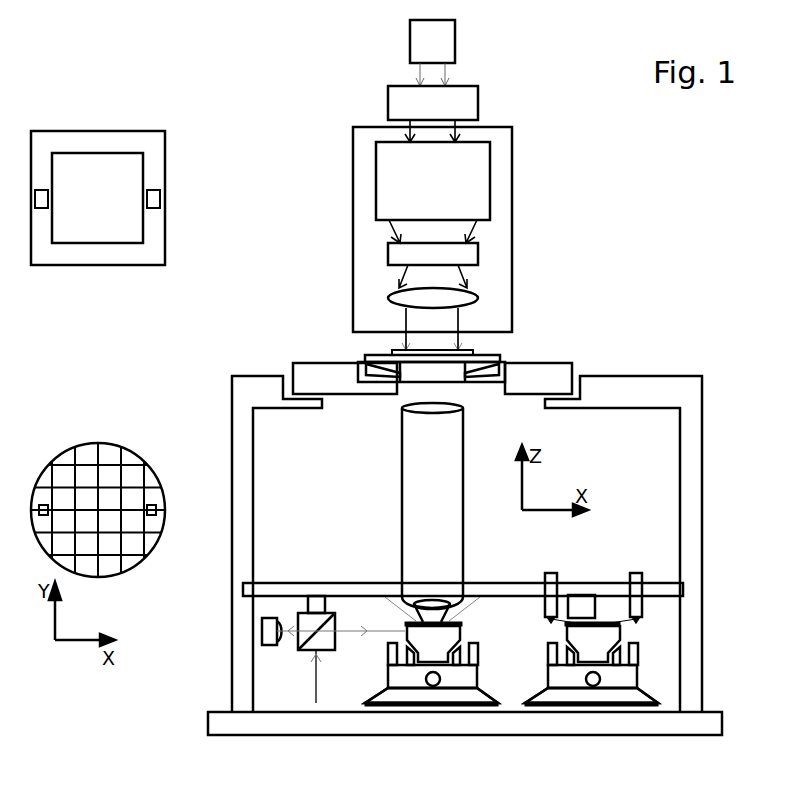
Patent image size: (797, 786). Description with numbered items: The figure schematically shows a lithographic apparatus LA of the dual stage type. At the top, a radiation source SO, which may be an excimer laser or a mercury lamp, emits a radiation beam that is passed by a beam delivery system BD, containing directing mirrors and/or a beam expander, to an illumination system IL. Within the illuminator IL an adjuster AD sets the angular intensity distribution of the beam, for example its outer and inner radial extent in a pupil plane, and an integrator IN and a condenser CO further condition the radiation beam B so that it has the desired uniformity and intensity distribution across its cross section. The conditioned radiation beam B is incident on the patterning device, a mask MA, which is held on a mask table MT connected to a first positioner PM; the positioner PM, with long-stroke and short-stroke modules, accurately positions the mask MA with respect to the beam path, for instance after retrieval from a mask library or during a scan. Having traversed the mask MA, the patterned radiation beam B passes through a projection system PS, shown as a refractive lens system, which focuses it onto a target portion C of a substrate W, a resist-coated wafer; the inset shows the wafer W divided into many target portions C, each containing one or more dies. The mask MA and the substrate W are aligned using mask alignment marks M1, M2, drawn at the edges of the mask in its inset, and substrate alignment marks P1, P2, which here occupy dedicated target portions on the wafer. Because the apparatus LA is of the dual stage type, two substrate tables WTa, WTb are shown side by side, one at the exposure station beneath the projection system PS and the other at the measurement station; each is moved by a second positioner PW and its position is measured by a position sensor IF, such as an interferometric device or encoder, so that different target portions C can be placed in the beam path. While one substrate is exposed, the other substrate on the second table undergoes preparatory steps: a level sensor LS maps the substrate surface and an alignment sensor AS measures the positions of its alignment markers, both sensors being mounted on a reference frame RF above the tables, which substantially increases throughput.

The lithographic apparatus LA is at (612, 203).
The radiation source SO is at (455, 45).
The beam delivery system BD is at (478, 110).
The illumination system IL is at (512, 160).
The adjuster AD is at (490, 200).
The integrator IN is at (478, 252).
The condenser CO is at (470, 297).
The radiation beam B is at (433, 347).
The patterning device MA is at (172, 220).
The mask alignment mark M1 is at (153, 190).
The mask alignment mark M2 is at (40, 190).
The first positioner PM is at (293, 366).
The mask table MT is at (572, 363).
The projection system PS is at (463, 490).
The substrate W is at (173, 503).
The target portion C is at (98, 510).
The substrate alignment mark P1 is at (43, 505).
The substrate alignment mark P2 is at (152, 505).
The reference frame RF is at (515, 583).
The level sensor LS is at (640, 575).
The alignment sensor AS is at (578, 605).
The substrate table WTa is at (462, 630).
The substrate table WTb is at (620, 632).
The second positioner PW is at (387, 687).
The position sensor IF is at (292, 655).